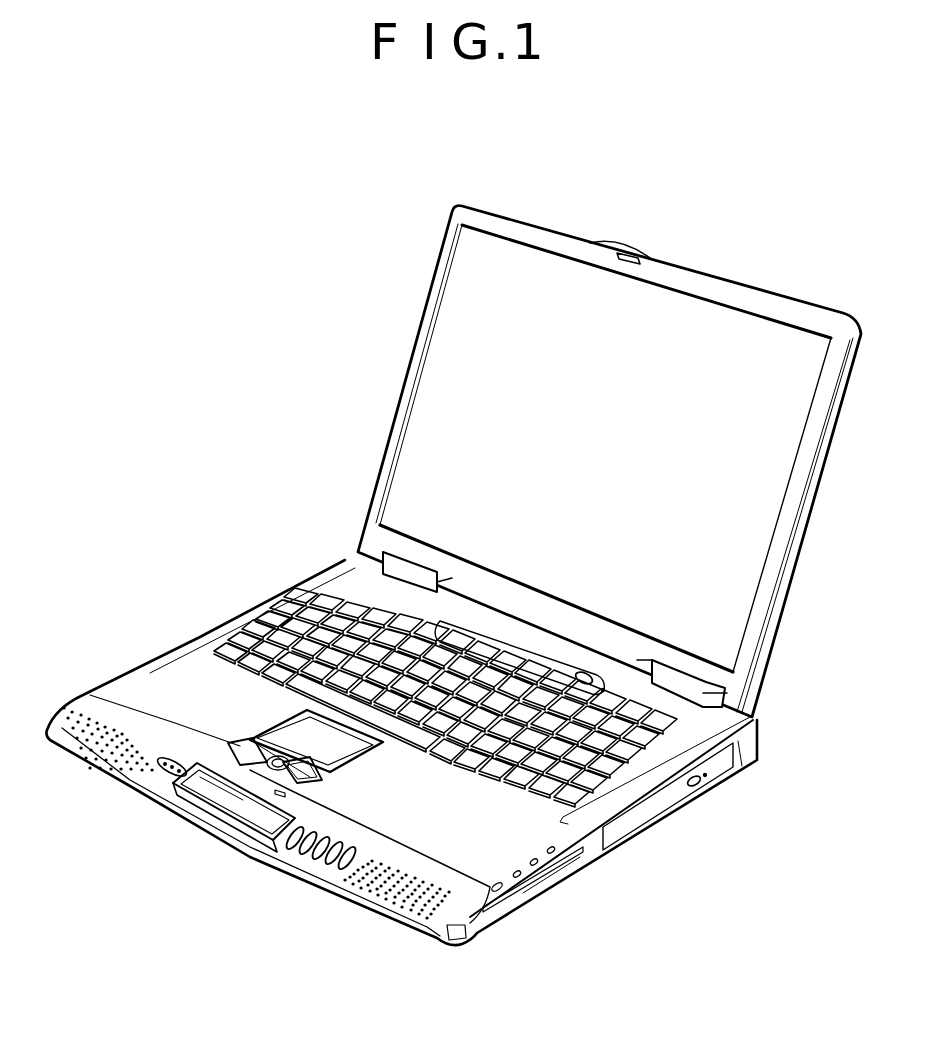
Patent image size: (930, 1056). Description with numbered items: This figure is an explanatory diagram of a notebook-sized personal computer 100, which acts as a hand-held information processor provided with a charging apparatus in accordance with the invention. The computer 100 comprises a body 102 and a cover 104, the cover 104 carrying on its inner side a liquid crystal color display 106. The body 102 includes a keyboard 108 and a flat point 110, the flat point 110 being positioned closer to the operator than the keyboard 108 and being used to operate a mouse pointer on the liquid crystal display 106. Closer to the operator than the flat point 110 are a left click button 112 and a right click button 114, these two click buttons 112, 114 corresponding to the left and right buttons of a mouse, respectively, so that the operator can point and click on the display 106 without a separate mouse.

The notebook-sized personal computer 100 is at (328, 368).
The body 102 is at (157, 653).
The cover 104 is at (437, 262).
The liquid crystal color display 106 is at (728, 337).
The keyboard 108 is at (277, 632).
The flat point 110 is at (337, 743).
The left click button 112 is at (187, 813).
The right click button 114 is at (310, 780).